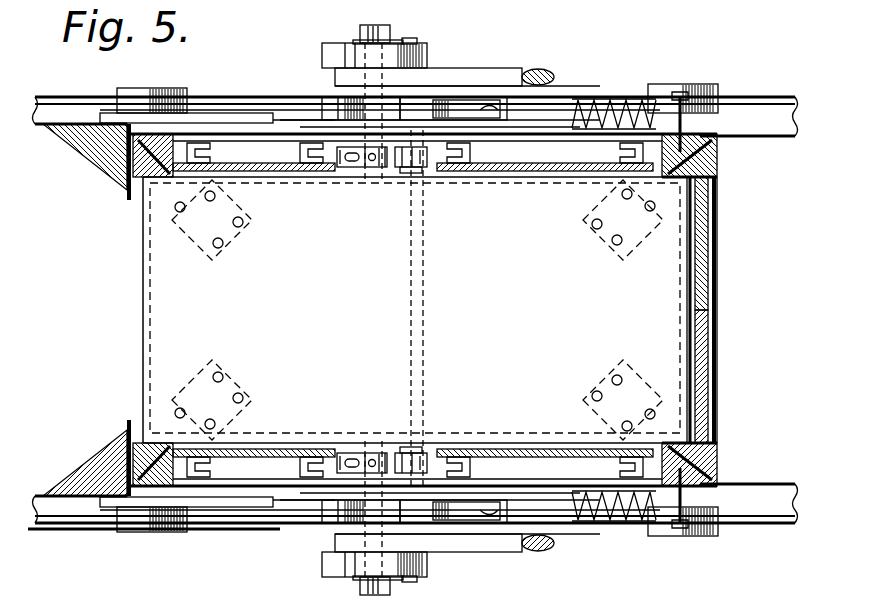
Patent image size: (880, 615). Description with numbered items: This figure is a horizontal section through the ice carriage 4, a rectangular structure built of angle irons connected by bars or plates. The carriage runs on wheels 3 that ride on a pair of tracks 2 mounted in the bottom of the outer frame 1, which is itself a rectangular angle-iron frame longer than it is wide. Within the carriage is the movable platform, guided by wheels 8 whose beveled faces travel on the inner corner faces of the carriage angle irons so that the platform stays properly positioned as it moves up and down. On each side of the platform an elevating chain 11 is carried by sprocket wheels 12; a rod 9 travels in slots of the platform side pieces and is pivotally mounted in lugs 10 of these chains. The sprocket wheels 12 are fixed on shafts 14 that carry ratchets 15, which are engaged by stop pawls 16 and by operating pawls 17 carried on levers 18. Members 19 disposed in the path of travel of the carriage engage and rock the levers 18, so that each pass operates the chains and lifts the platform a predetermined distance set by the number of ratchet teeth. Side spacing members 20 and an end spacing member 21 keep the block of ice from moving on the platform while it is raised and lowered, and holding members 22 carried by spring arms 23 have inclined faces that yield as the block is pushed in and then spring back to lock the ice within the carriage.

The frame 1 is at (415, 308).
The tracks 2 is at (45, 105).
The wheels 3 is at (125, 92).
The ice carriage 4 is at (717, 310).
The wheels 8 is at (140, 192).
The rod 9 is at (426, 440).
The lugs 10 is at (425, 168).
The elevating chains 11 is at (340, 170).
The sprocket wheels 12 is at (372, 168).
The shafts 14 is at (360, 62).
The ratchets 15 is at (340, 108).
The stop pawls 16 is at (412, 110).
The operating pawls 17 is at (418, 62).
The levers 18 is at (510, 76).
The members 19 is at (372, 565).
The side spacing members 20 is at (557, 162).
The end spacing member 21 is at (700, 270).
The members 22 is at (95, 150).
The spring arms 23 is at (190, 118).